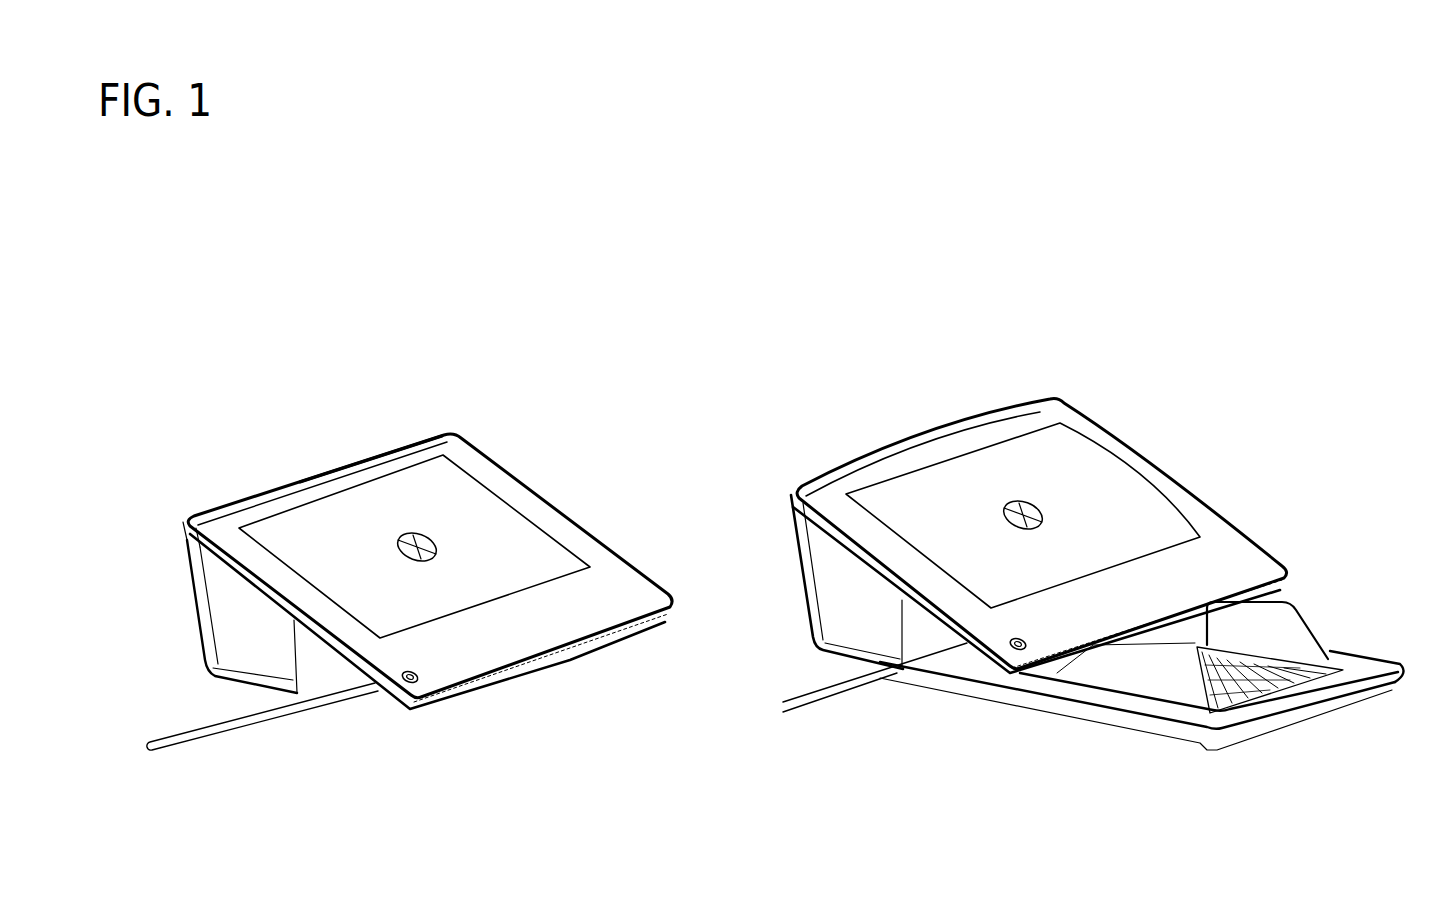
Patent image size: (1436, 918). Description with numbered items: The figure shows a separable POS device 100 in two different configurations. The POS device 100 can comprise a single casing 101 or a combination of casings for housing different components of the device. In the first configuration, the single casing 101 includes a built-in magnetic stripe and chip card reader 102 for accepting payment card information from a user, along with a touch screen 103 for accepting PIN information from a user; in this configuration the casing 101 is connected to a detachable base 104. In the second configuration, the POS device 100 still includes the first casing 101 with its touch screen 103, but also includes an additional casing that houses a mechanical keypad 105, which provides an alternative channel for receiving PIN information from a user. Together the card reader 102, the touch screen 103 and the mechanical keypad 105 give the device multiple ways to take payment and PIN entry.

The separable POS device 100 is at (229, 324).
The casing 101 is at (380, 687).
The built-in magnetic stripe and chip card reader 102 is at (368, 454).
The touch screen 103 is at (463, 577).
The detachable base 104 is at (430, 712).
The mechanical keypad 105 is at (1280, 730).